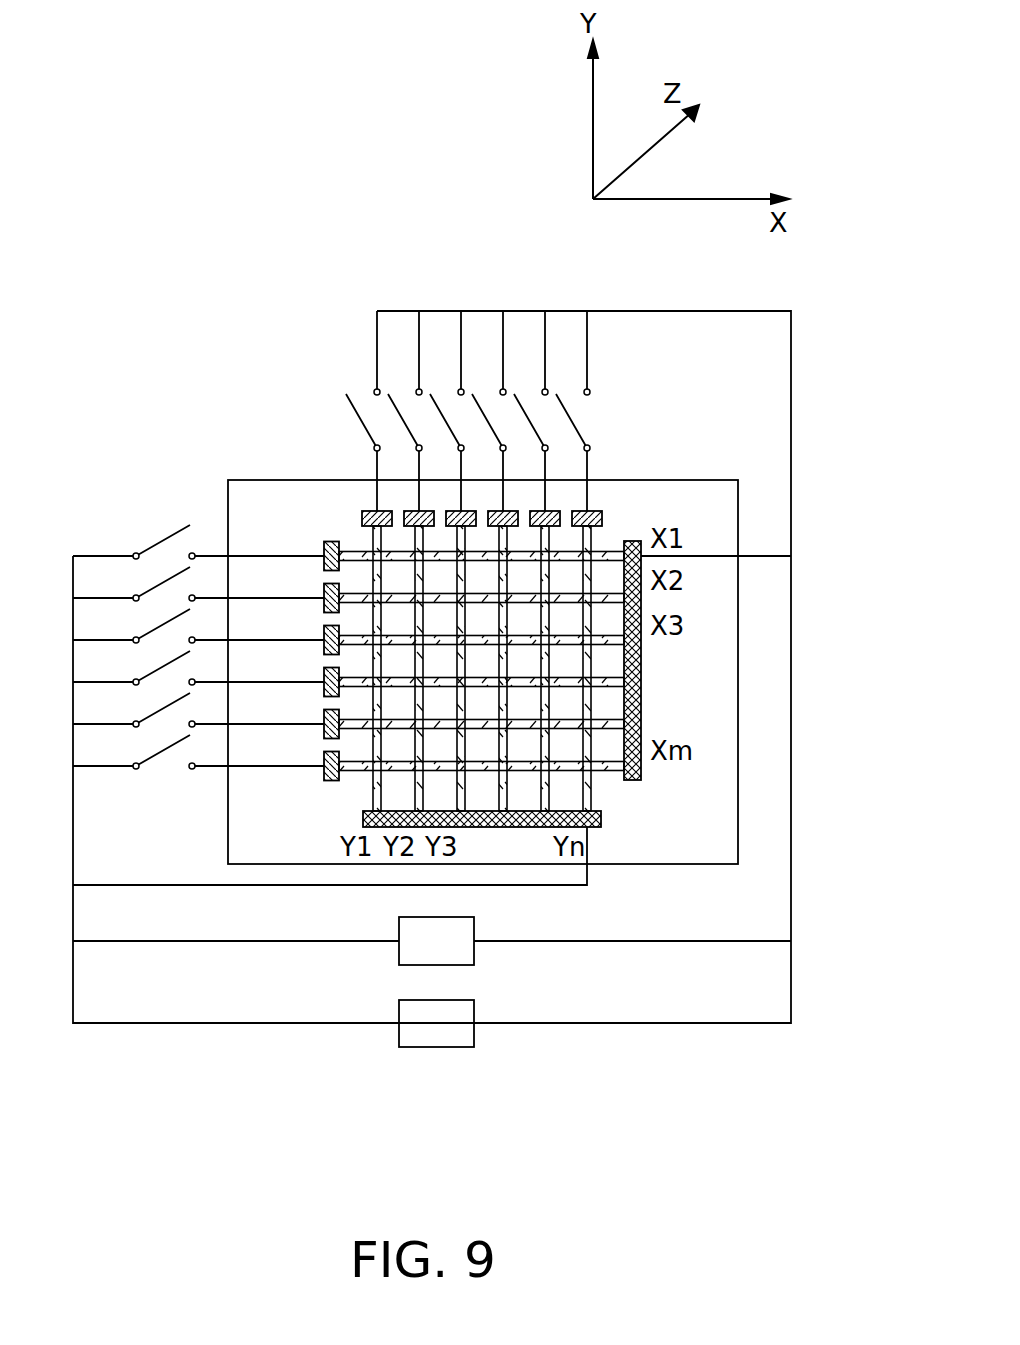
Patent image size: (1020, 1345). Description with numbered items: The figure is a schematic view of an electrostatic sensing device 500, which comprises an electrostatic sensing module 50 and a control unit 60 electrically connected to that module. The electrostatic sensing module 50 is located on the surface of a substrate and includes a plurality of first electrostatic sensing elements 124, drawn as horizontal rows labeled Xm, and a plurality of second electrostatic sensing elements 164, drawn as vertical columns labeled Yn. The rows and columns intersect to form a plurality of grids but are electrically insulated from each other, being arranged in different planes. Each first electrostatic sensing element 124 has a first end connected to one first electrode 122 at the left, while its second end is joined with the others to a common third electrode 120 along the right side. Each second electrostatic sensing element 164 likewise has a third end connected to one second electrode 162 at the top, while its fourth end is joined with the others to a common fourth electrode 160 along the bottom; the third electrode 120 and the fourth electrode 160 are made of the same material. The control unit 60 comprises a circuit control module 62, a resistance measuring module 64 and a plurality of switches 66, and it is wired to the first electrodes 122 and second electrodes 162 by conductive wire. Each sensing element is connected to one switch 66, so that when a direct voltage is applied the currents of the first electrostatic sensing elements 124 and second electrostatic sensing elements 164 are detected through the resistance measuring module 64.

The electrostatic sensing device 500 is at (267, 107).
The electrostatic sensing module 50 is at (224, 312).
The switches 66 is at (163, 540).
The third electrode 120 is at (634, 541).
The first electrodes 122 is at (332, 541).
The first electrostatic sensing elements 124 is at (357, 550).
The fourth electrode 160 is at (363, 815).
The second electrodes 162 is at (372, 511).
The second electrostatic sensing elements 164 is at (367, 533).
The control unit 60 is at (491, 1054).
The circuit control module 62 is at (460, 927).
The resistance measuring module 64 is at (442, 1073).